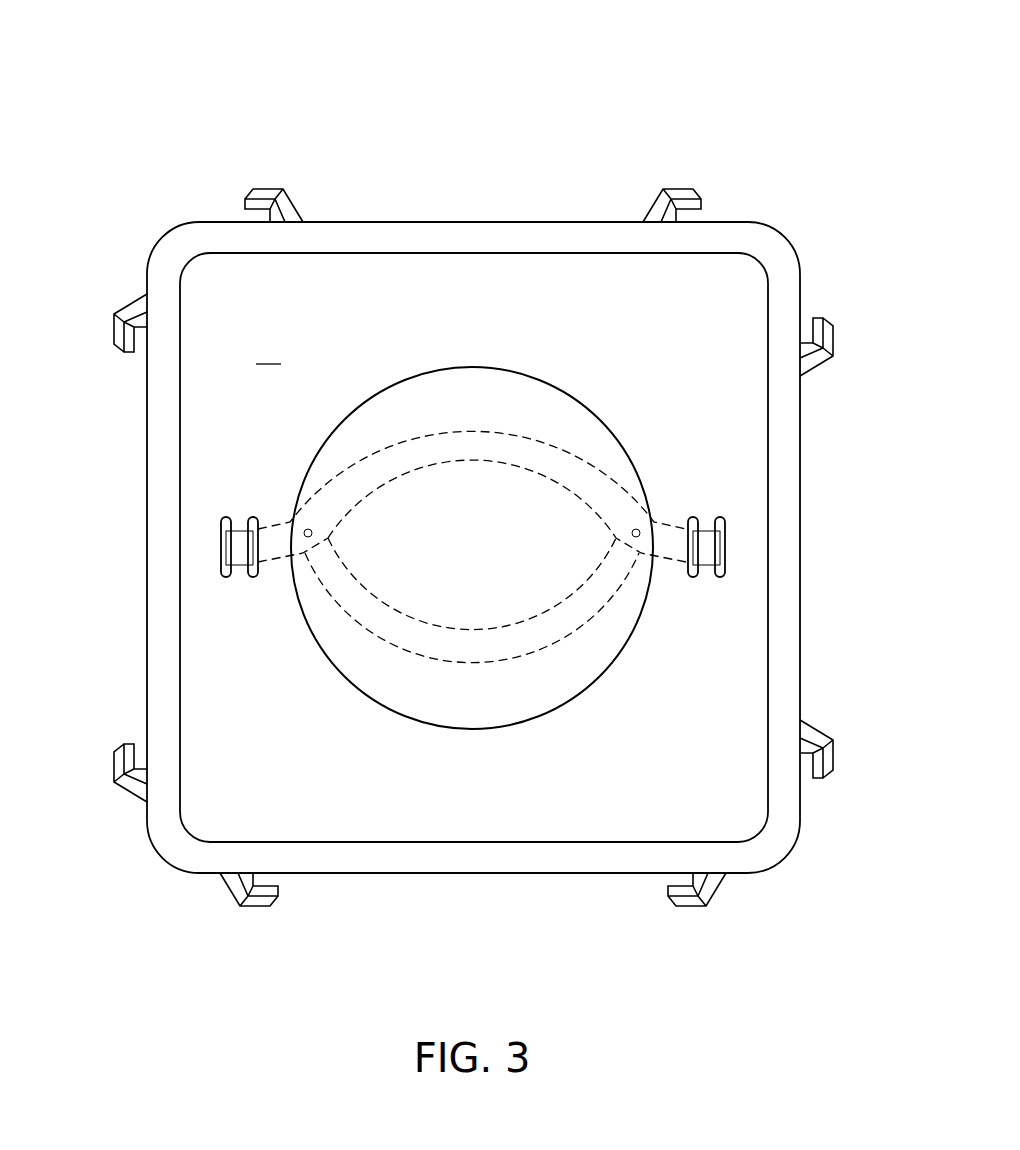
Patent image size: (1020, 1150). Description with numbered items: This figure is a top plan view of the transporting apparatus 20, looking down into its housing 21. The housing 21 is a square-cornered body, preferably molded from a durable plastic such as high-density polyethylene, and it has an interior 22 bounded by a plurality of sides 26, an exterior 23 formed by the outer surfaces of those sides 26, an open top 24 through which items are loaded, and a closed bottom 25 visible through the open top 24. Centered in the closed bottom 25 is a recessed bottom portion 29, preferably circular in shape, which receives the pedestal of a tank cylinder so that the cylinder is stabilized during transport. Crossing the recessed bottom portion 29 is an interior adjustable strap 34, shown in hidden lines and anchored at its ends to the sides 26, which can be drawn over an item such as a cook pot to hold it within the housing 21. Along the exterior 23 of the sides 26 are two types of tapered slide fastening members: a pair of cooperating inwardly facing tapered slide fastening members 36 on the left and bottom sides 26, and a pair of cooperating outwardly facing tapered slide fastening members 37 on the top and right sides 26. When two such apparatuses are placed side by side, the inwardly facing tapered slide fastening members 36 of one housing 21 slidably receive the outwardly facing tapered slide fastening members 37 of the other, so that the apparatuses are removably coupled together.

The transporting apparatus 20 is at (214, 64).
The housing 21 is at (116, 460).
The interior 22 is at (368, 253).
The exterior 23 is at (578, 221).
The open top 24 is at (210, 232).
The closed bottom 25 is at (268, 350).
The sides 26 is at (466, 221).
The recessed bottom portion 29 is at (560, 390).
The interior adjustable strap 34 is at (565, 472).
The inwardly facing tapered slide fastening members 36 is at (116, 326).
The outwardly facing tapered slide fastening members 37 is at (265, 193).